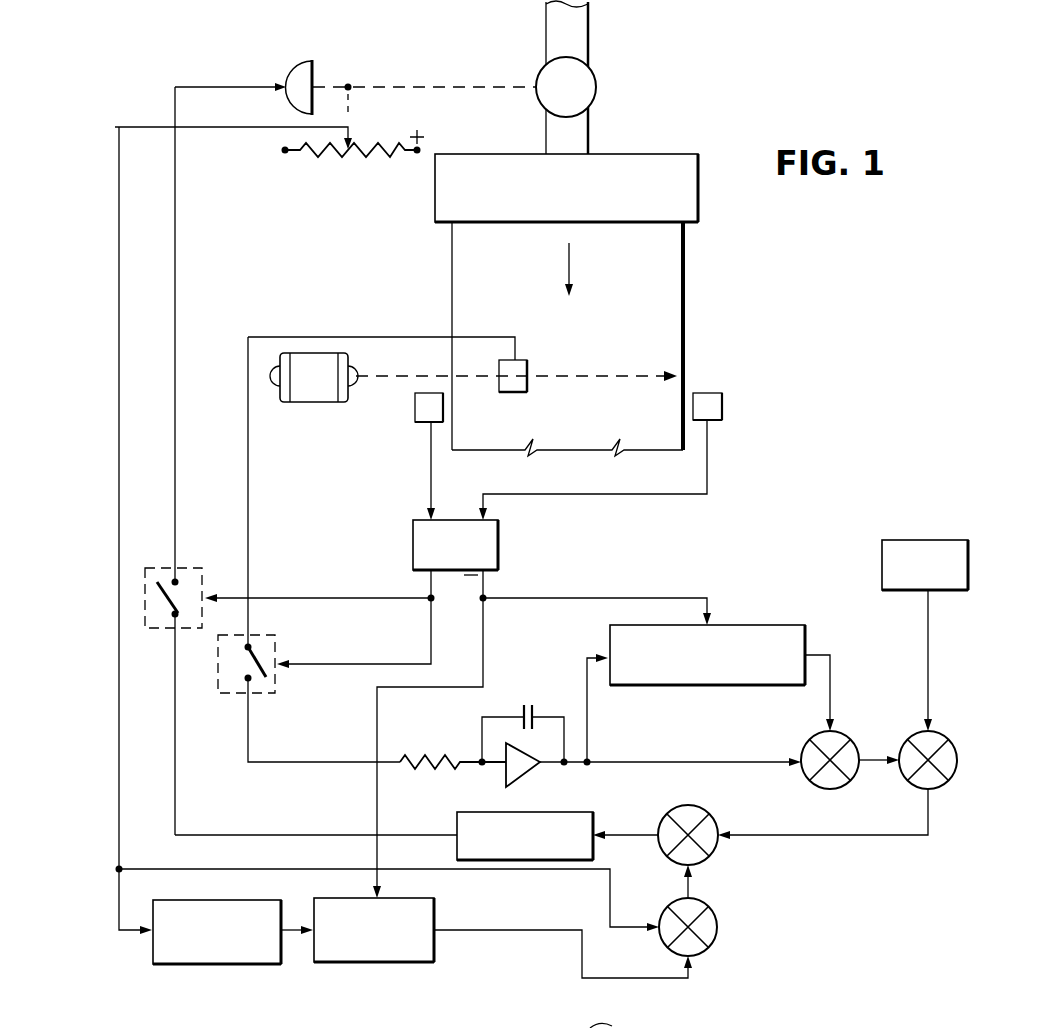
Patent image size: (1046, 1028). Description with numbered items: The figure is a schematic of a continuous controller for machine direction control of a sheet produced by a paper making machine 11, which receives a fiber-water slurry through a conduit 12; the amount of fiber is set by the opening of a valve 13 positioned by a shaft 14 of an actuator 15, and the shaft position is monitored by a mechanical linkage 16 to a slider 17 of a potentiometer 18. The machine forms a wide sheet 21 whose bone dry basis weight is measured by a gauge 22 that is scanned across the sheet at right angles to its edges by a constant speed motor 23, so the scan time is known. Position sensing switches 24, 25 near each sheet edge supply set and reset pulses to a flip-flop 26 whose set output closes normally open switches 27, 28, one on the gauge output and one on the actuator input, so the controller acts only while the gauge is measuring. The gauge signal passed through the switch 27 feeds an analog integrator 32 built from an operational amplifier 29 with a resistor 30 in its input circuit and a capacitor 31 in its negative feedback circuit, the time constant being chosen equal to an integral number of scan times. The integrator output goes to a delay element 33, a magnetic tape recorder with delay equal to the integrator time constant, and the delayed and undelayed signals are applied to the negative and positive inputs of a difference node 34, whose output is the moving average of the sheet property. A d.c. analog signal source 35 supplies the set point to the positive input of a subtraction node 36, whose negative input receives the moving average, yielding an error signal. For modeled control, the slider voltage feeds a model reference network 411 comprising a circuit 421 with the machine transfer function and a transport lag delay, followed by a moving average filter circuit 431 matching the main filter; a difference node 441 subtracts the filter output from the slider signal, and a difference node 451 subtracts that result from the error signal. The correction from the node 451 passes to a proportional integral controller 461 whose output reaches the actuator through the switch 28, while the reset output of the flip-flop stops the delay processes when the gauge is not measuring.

The paper making machine 11 is at (700, 165).
The conduit 12 is at (590, 22).
The valve 13 is at (593, 70).
The shaft 14 is at (450, 82).
The actuator 15 is at (318, 78).
The mechanical linkage 16 is at (353, 107).
The slider 17 is at (352, 131).
The potentiometer 18 is at (378, 160).
The sheet 21 is at (685, 288).
The gauge 22 is at (527, 363).
The constant speed motor 23 is at (300, 398).
The position sensing switch 24 is at (415, 420).
The position sensing switch 25 is at (722, 394).
The flip-flop 26 is at (500, 543).
The switch 27 is at (278, 636).
The switch 28 is at (200, 568).
The operational amplifier 29 is at (530, 770).
The resistor 30 is at (440, 752).
The capacitor 31 is at (530, 712).
The analog integrator 32 is at (450, 786).
The delay element 33 is at (779, 604).
The difference node 34 is at (845, 738).
The d.c. analog signal source 35 is at (940, 540).
The subtraction node 36 is at (945, 738).
The model reference network 411 is at (228, 978).
The circuit 421 is at (153, 950).
The moving average filter circuit 431 is at (437, 916).
The difference node 441 is at (716, 912).
The difference node 451 is at (712, 818).
The proportional integral controller 461 is at (595, 817).